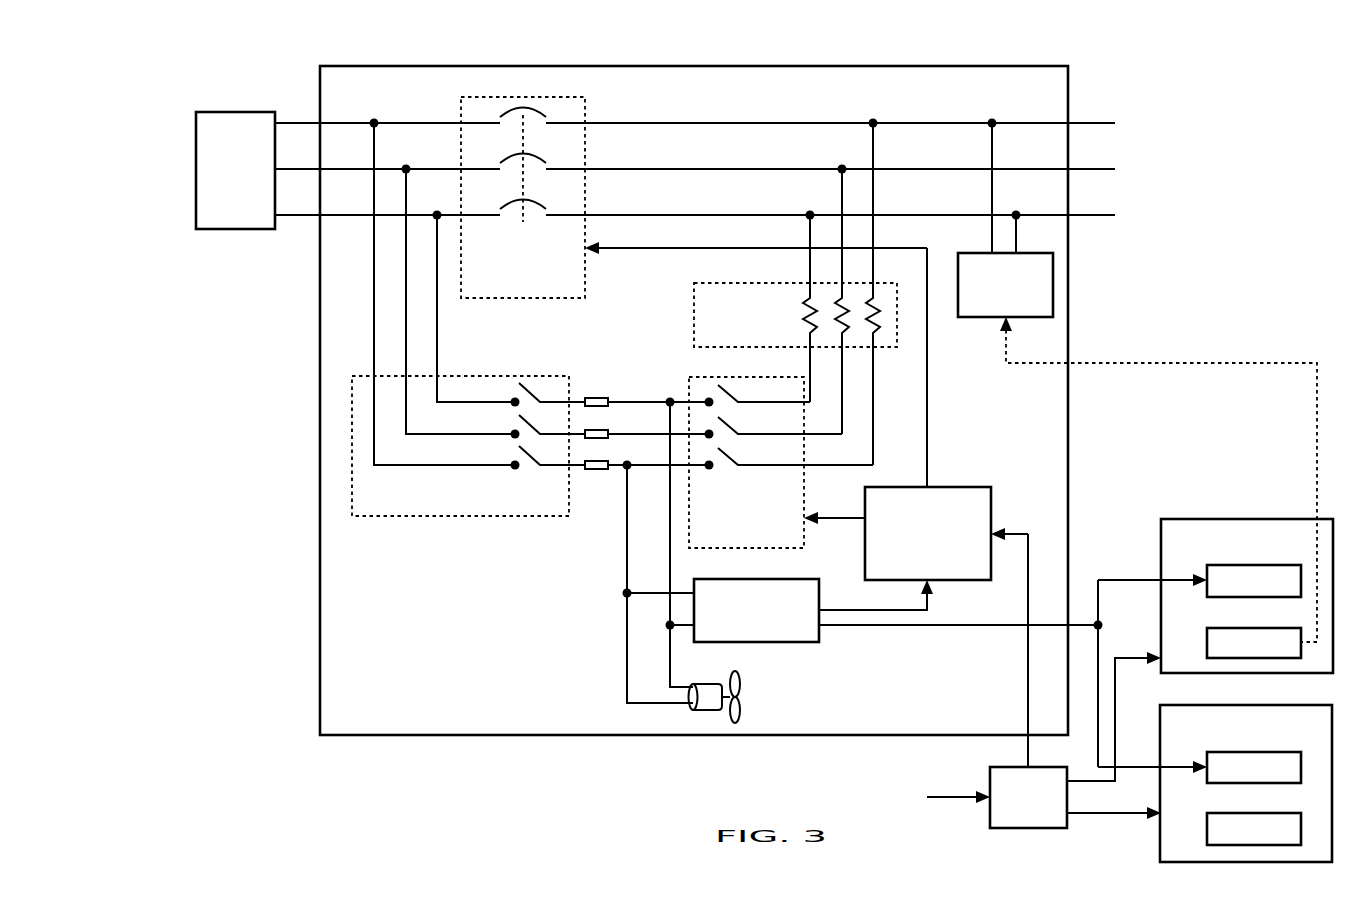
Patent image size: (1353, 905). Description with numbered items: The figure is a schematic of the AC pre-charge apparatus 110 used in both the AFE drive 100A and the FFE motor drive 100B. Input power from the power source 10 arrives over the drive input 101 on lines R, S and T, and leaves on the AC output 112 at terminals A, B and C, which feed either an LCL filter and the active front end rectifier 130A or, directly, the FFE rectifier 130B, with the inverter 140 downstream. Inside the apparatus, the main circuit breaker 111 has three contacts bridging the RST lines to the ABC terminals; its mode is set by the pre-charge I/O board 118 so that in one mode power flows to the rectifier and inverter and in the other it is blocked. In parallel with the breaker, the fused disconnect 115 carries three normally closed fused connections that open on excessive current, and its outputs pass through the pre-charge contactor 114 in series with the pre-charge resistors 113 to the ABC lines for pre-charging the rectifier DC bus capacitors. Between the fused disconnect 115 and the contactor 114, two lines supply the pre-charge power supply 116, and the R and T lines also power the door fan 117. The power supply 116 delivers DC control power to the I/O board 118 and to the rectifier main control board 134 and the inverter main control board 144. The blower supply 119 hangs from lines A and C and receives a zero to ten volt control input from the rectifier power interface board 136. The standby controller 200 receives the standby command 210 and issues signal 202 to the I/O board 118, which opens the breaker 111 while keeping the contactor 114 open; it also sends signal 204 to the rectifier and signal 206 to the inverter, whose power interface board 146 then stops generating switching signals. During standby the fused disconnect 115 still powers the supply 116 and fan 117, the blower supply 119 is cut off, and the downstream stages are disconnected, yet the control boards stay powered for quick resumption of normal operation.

The power source 10 is at (228, 112).
The AFE drive 100A is at (274, 58).
The FFE motor drive 100B is at (274, 58).
The drive input 101 is at (297, 244).
The AC pre-charge apparatus 110 is at (335, 66).
The main circuit breaker 111 is at (566, 298).
The AC output 112 is at (1130, 104).
The pre-charge resistors 113 is at (694, 316).
The pre-charge contactor 114 is at (700, 377).
The fused disconnect 115 is at (553, 377).
The pre-charge power supply 116 is at (752, 579).
The door fan 117 is at (700, 710).
The pre-charge I/O board 118 is at (955, 487).
The blower supply 119 is at (966, 253).
The active front end rectifier 130A is at (1245, 519).
The FFE rectifier 130B is at (1245, 519).
The rectifier main control board 134 is at (1220, 565).
The rectifier power interface board 136 is at (1220, 628).
The inverter 140 is at (1245, 705).
The inverter main control board 144 is at (1220, 752).
The inverter power interface board 146 is at (1220, 813).
The standby controller 200 is at (1003, 767).
The signal 202 is at (1028, 708).
The signal 204 is at (1110, 790).
The signal 206 is at (1130, 815).
The standby command 210 is at (942, 797).